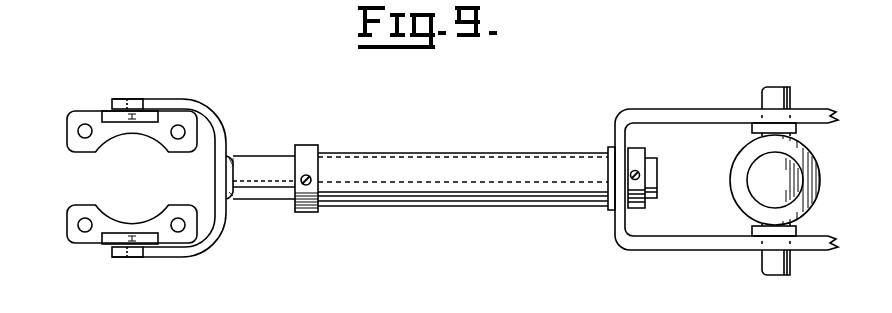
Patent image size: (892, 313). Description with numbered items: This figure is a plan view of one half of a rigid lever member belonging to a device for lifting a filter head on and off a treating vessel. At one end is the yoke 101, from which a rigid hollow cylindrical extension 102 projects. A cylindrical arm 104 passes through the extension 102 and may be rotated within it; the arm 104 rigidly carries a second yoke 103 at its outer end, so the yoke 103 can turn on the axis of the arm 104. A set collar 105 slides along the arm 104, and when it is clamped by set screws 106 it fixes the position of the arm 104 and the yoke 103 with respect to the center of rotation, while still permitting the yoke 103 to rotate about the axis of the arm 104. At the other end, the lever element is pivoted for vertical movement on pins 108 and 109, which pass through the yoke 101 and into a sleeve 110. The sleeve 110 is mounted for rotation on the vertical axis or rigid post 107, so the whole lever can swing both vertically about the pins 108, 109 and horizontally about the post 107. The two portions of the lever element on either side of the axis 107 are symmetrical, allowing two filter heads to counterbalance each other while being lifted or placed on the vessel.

The yoke 101 is at (656, 242).
The rigid hollow cylindrical extension 102 is at (478, 193).
The yoke 103 is at (212, 120).
The cylindrical arm 104 is at (273, 187).
The set collar 105 is at (306, 154).
The set screws 106 is at (300, 176).
The rigid post 107 is at (755, 163).
The pin 108 is at (770, 93).
The pin 109 is at (764, 262).
The sleeve 110 is at (745, 205).